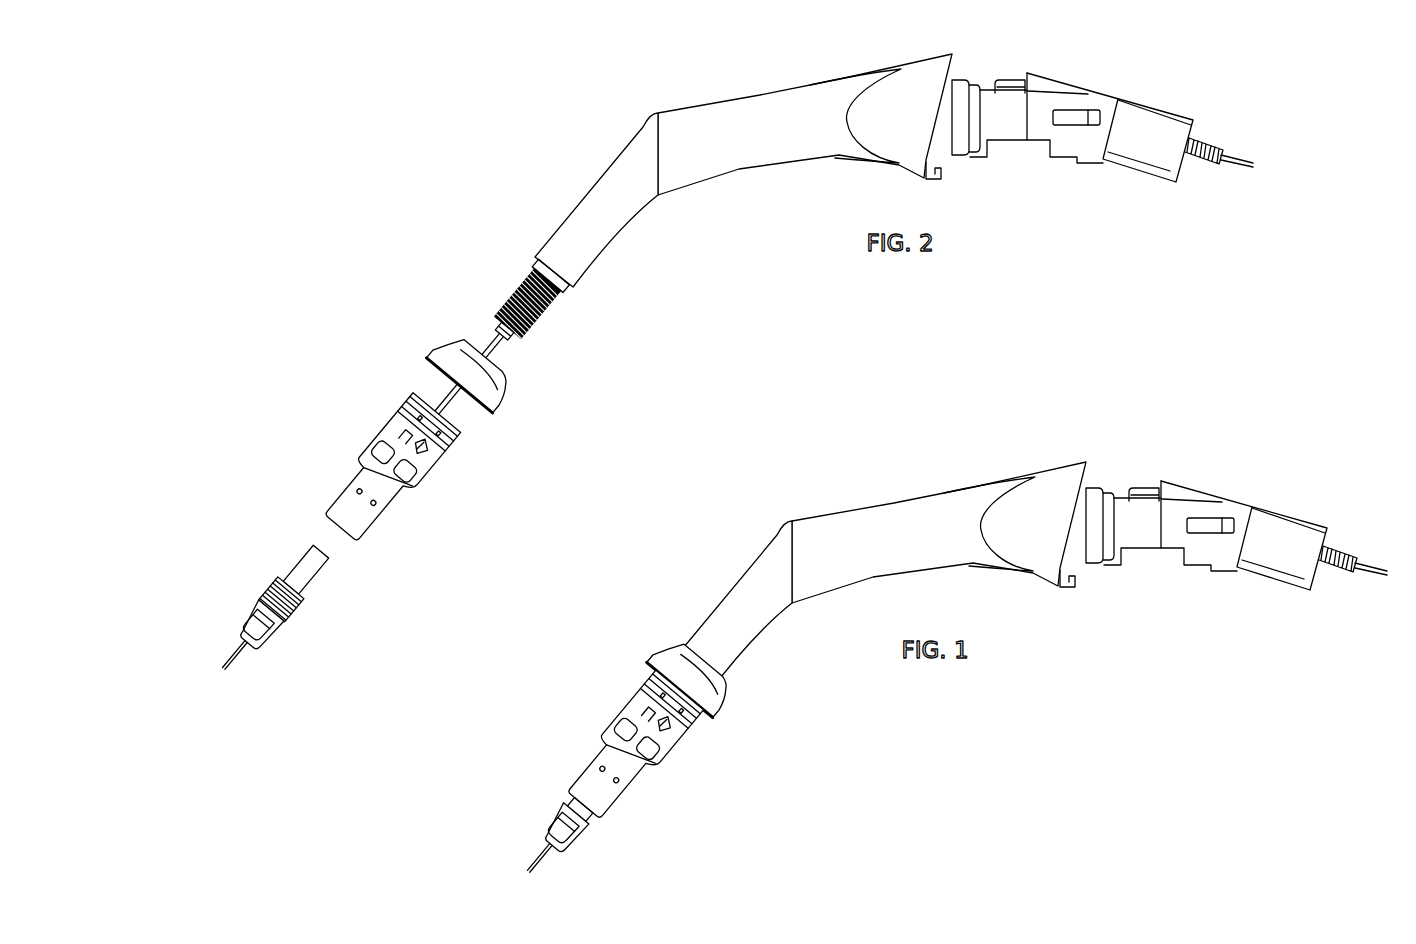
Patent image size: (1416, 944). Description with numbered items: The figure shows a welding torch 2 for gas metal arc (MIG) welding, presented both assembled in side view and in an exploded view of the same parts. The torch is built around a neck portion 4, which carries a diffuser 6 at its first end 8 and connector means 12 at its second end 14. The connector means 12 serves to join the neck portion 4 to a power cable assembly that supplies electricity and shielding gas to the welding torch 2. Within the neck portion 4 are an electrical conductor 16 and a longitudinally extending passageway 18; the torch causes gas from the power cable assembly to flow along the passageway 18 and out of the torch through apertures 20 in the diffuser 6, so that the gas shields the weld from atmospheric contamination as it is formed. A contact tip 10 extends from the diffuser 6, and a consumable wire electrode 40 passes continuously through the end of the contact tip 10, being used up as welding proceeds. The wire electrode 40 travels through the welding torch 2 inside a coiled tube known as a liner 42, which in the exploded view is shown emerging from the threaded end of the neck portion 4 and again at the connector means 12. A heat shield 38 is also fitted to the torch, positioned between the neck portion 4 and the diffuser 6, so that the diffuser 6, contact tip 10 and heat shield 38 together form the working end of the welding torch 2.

In FIG. 2, the welding torch 2 is at (748, 386).
In FIG. 1, the welding torch 2 is at (941, 657).
In FIG. 1, the neck portion 4 is at (867, 505).
In FIG. 2, the diffuser 6 is at (397, 507).
In FIG. 1, the diffuser 6 is at (587, 753).
In FIG. 2, the first end 8 is at (543, 313).
In FIG. 2, the contact tip 10 is at (290, 632).
In FIG. 1, the contact tip 10 is at (545, 813).
In FIG. 2, the connector means 12 is at (1177, 100).
In FIG. 1, the connector means 12 is at (1292, 510).
In FIG. 2, the second end 14 is at (1088, 163).
In FIG. 1, the second end 14 is at (1220, 500).
In FIG. 2, the electrical conductor 16 is at (560, 288).
In FIG. 2, the longitudinally extending passageway 18 is at (497, 320).
In FIG. 2, the apertures 20 is at (357, 490).
In FIG. 1, the apertures 20 is at (617, 783).
In FIG. 2, the heat shield 38 is at (437, 355).
In FIG. 1, the heat shield 38 is at (657, 660).
In FIG. 2, the consumable wire electrode 40 is at (453, 400).
In FIG. 2, the liner 42 is at (507, 337).
In FIG. 1, the liner 42 is at (1347, 550).